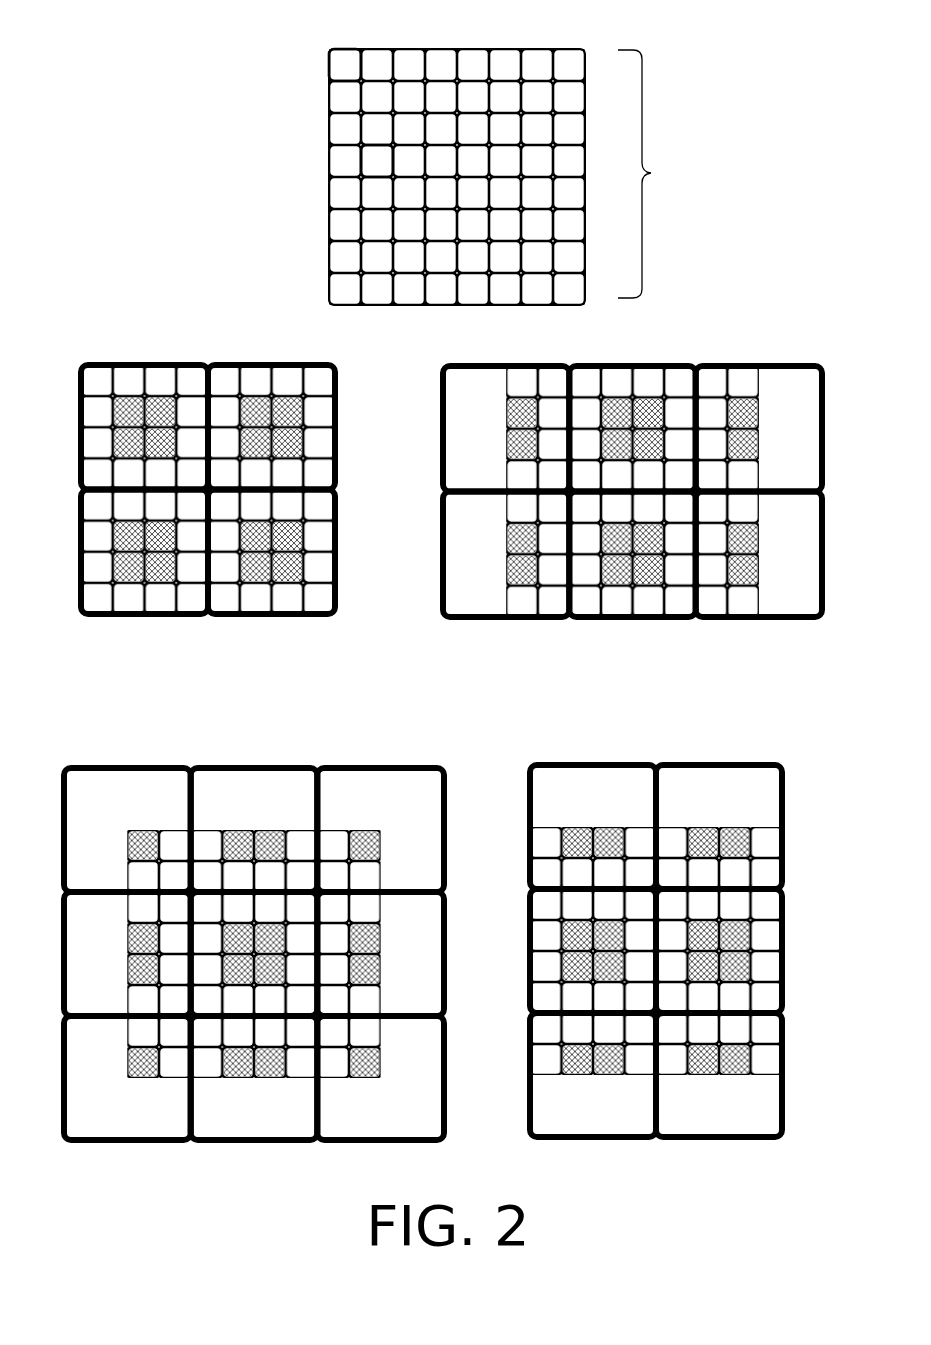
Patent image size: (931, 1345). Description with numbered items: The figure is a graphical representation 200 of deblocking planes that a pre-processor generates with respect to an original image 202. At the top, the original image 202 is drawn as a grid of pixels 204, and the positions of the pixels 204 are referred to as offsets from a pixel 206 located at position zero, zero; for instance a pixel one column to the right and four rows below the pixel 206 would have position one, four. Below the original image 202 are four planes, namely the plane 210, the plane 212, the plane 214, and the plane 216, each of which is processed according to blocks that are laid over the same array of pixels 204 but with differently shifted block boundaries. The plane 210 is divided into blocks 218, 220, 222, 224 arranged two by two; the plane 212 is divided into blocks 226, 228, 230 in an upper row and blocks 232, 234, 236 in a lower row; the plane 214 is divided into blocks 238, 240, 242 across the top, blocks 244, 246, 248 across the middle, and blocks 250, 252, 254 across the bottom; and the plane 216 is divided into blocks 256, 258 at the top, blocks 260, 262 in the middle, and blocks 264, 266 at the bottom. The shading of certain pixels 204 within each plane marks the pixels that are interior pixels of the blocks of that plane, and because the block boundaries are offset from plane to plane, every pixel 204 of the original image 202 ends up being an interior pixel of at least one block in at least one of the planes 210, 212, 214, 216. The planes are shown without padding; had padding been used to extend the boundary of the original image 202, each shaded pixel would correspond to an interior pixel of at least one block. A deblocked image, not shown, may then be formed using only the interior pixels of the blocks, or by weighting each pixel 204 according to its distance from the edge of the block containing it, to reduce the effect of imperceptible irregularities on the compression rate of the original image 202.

The graphical representation 200 is at (157, 53).
The original image 202 is at (670, 183).
The pixels 204 is at (308, 148).
The pixel 206 is at (348, 68).
The plane 210 is at (208, 336).
The plane 212 is at (675, 344).
The plane 214 is at (193, 741).
The plane 216 is at (648, 739).
The block 218 is at (147, 362).
The block 220 is at (316, 362).
The block 222 is at (143, 618).
The block 224 is at (272, 618).
The block 226 is at (528, 363).
The block 228 is at (640, 364).
The block 230 is at (797, 364).
The block 232 is at (521, 620).
The block 234 is at (633, 620).
The block 236 is at (745, 620).
The block 238 is at (158, 765).
The block 240 is at (292, 765).
The block 242 is at (418, 765).
The block 244 is at (68, 950).
The block 246 is at (203, 1020).
The block 248 is at (447, 972).
The block 250 is at (128, 1144).
The block 252 is at (254, 1144).
The block 254 is at (383, 1144).
The block 256 is at (610, 762).
The block 258 is at (763, 762).
The block 260 is at (527, 912).
The block 262 is at (785, 935).
The block 264 is at (596, 1141).
The block 266 is at (724, 1141).